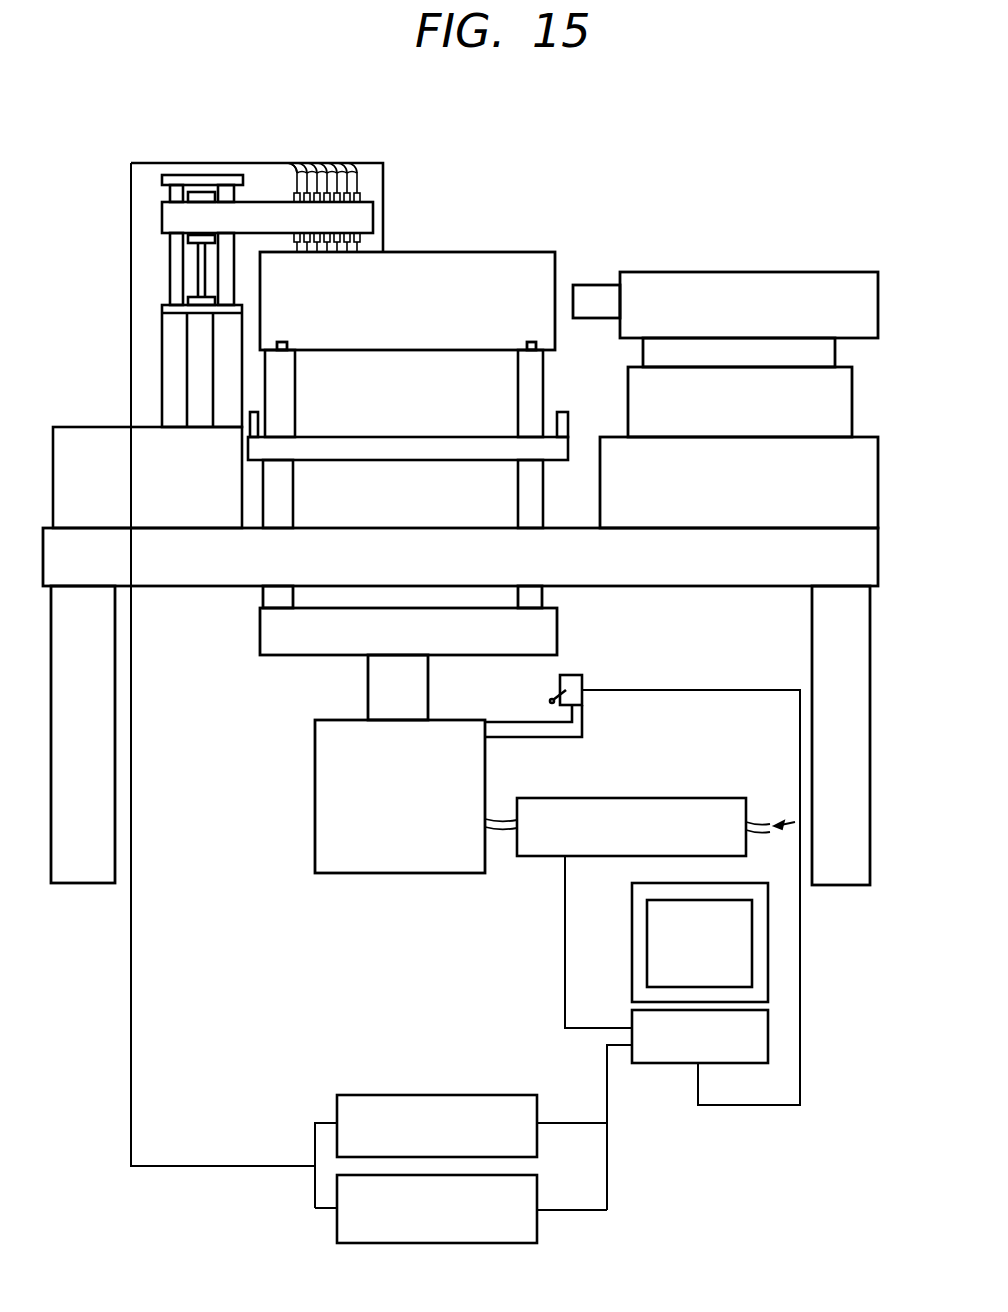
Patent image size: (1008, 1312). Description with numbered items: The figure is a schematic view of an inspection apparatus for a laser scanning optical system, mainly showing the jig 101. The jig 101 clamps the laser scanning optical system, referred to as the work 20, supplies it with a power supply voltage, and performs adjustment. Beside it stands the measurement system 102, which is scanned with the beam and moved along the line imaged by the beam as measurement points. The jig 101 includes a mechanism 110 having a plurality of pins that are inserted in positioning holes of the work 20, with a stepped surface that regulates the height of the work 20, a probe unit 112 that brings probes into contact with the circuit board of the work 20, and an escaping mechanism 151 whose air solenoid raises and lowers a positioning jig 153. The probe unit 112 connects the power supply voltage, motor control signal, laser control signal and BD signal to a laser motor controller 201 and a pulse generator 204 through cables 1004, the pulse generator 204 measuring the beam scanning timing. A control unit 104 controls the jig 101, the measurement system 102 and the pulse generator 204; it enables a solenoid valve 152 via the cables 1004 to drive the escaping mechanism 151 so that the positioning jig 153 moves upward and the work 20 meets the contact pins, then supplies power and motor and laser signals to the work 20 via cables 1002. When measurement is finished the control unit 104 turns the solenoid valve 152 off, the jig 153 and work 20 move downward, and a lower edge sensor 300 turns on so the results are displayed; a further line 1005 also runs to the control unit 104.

The jig 101 is at (570, 114).
The probe unit 112 is at (362, 154).
The measurement system 102 is at (877, 228).
The work 20 is at (532, 257).
The mechanism 110 is at (288, 345).
The positioning jig 153 is at (558, 622).
The escaping mechanism 151 is at (488, 758).
The lower edge sensor 300 is at (571, 678).
The solenoid valve 152 is at (720, 800).
The cables 1004 is at (563, 1020).
The control unit 104 is at (660, 1066).
The signal line 1005 is at (732, 1107).
The pulse generator 204 is at (538, 1105).
The laser motor controller 201 is at (538, 1187).
The cables 1002 is at (132, 750).